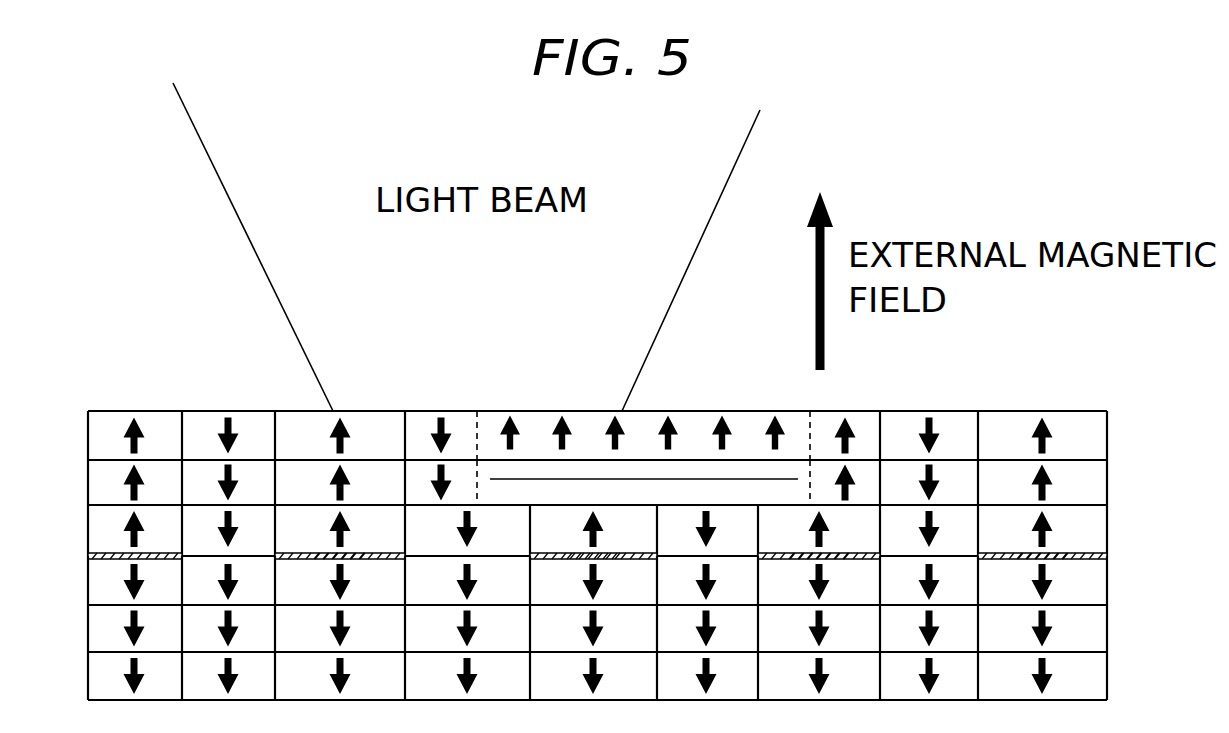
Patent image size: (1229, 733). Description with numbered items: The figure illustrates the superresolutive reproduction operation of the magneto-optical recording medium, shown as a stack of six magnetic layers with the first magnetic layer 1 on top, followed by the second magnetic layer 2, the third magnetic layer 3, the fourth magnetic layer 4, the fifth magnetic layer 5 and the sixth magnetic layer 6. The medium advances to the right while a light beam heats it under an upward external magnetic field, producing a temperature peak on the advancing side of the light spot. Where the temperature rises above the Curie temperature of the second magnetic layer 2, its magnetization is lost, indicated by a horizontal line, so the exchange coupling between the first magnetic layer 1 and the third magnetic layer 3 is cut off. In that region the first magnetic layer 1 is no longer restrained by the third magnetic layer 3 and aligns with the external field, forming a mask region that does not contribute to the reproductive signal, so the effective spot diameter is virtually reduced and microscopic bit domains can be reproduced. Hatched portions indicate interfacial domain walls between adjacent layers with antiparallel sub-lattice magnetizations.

The first magnetic layer 1 is at (631, 433).
The second magnetic layer 2 is at (631, 479).
The third magnetic layer 3 is at (631, 530).
The fourth magnetic layer 4 is at (631, 579).
The fifth magnetic layer 5 is at (631, 628).
The sixth magnetic layer 6 is at (631, 676).